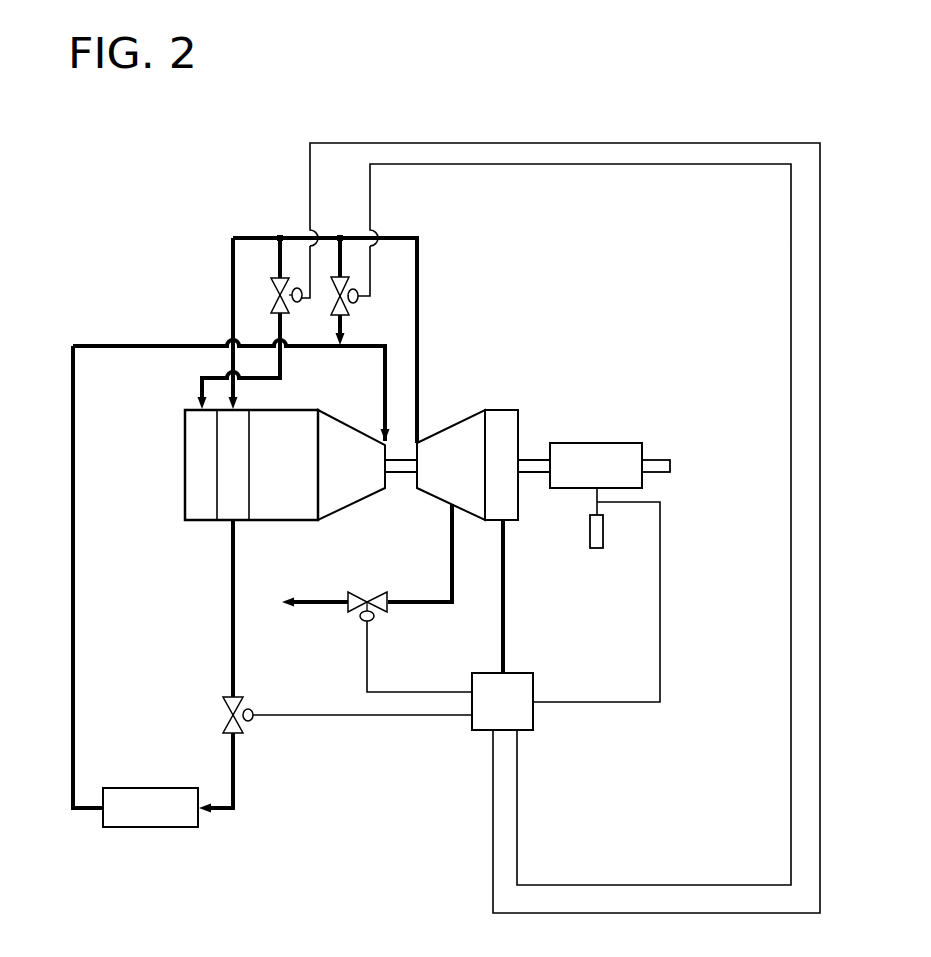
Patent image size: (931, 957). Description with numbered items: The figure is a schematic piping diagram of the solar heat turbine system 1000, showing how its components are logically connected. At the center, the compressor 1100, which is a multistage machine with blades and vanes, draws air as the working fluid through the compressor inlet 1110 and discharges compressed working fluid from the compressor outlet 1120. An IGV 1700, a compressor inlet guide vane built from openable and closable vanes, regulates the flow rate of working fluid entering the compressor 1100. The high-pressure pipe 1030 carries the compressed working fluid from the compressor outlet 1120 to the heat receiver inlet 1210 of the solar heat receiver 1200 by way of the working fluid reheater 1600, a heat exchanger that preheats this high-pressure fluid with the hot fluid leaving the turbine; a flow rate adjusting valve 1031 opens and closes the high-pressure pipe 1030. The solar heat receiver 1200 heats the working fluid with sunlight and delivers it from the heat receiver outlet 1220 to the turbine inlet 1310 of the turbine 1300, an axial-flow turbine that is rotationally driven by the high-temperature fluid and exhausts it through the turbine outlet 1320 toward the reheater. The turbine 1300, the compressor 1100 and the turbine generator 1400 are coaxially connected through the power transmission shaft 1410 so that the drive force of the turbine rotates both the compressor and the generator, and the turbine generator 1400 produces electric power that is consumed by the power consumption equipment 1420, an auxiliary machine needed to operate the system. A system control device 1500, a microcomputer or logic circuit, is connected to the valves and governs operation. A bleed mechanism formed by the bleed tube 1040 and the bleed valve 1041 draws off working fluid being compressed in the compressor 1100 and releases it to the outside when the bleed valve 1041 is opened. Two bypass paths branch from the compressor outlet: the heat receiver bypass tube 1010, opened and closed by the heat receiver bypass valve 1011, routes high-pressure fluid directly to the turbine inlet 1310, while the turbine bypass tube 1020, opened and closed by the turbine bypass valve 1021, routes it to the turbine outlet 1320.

The solar heat turbine system 1000 is at (677, 80).
The heat receiver bypass tube 1010 is at (343, 265).
The heat receiver bypass valve 1011 is at (350, 307).
The turbine bypass tube 1020 is at (280, 264).
The turbine bypass valve 1021 is at (273, 291).
The high-pressure pipe 1030 is at (232, 616).
The flow rate adjusting valve 1031 is at (222, 707).
The bleed tube 1040 is at (421, 605).
The bleed valve 1041 is at (355, 616).
The compressor 1100 is at (482, 397).
The compressor inlet 1110 is at (472, 440).
The compressor outlet 1120 is at (419, 437).
The solar heat receiver 1200 is at (153, 620).
The heat receiver inlet 1210 is at (200, 812).
The heat receiver outlet 1220 is at (103, 811).
The turbine 1300 is at (367, 467).
The turbine inlet 1310 is at (377, 433).
The turbine outlet 1320 is at (186, 463).
The turbine generator 1400 is at (652, 397).
The power transmission shaft 1410 is at (672, 465).
The power consumption equipment 1420 is at (597, 550).
The system control device 1500 is at (519, 671).
The working fluid reheater 1600 is at (231, 379).
The IGV 1700 is at (481, 440).